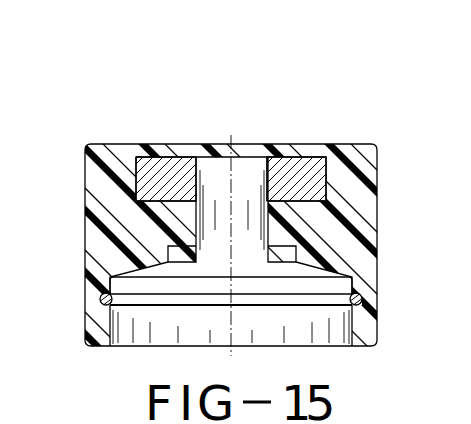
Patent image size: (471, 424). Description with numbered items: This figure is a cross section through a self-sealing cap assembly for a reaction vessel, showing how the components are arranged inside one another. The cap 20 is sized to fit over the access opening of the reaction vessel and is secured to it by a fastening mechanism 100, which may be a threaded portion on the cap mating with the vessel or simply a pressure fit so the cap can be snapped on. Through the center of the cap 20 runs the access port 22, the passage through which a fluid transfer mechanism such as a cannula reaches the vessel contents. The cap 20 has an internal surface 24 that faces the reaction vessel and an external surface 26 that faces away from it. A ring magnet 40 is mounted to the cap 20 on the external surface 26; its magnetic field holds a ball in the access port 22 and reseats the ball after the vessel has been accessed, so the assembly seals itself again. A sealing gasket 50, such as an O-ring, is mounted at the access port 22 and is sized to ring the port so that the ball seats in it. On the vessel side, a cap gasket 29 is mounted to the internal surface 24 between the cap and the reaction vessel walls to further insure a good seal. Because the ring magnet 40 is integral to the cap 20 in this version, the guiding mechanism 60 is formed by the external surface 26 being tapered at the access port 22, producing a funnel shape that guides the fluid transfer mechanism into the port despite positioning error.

The fastening mechanism 100 is at (235, 242).
The cap 20 is at (85, 144).
The access port 22 is at (213, 228).
The cap internal surface 24 is at (318, 276).
The cap external surface 26 is at (160, 150).
The cap gasket 29 is at (103, 291).
The ring magnet 40 is at (322, 175).
The sealing gasket 50 is at (282, 262).
The guiding mechanism 60 is at (258, 183).